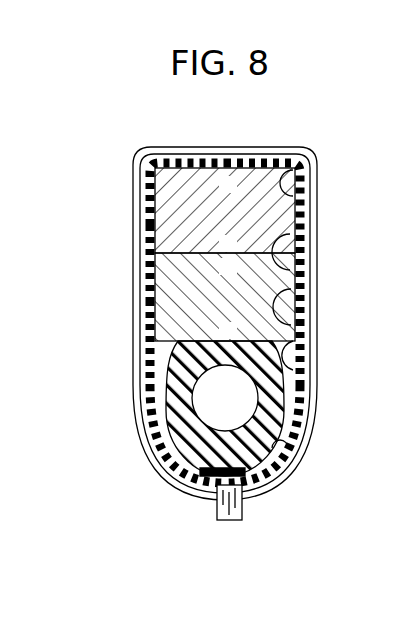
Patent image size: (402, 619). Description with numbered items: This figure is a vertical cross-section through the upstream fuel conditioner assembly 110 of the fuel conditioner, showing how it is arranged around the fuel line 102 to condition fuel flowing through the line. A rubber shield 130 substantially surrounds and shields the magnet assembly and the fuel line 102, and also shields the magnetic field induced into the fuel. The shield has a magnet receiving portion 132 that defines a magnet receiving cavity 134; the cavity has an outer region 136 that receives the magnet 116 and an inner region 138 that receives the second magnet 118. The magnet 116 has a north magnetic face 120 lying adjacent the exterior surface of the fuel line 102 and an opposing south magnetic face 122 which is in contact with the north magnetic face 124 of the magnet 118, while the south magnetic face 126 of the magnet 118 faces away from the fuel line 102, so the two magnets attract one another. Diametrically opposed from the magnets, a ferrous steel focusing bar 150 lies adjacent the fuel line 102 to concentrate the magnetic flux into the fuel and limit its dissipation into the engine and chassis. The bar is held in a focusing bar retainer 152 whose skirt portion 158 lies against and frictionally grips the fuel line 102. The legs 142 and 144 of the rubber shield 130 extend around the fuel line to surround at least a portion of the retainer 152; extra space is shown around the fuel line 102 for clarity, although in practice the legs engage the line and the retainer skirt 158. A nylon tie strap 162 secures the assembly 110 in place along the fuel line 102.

The upstream fuel conditioner assembly 110 is at (113, 522).
The fuel line 102 is at (183, 387).
The magnet 116 is at (170, 302).
The second magnet 118 is at (170, 232).
The north magnetic face 120 is at (297, 355).
The south magnetic face 122 is at (283, 245).
The north magnetic face 124 is at (283, 274).
The south magnetic face 126 is at (258, 158).
The rubber shield 130 is at (150, 334).
The magnet receiving portion 132 is at (150, 202).
The magnet receiving cavity 134 is at (150, 274).
The outer region 136 is at (300, 290).
The inner region 138 is at (303, 192).
The leg 142 is at (160, 412).
The leg 144 is at (293, 418).
The focusing bar 150 is at (263, 495).
The focusing bar retainer 152 is at (215, 472).
The skirt portion 158 is at (282, 448).
The nylon tie strap 162 is at (187, 488).